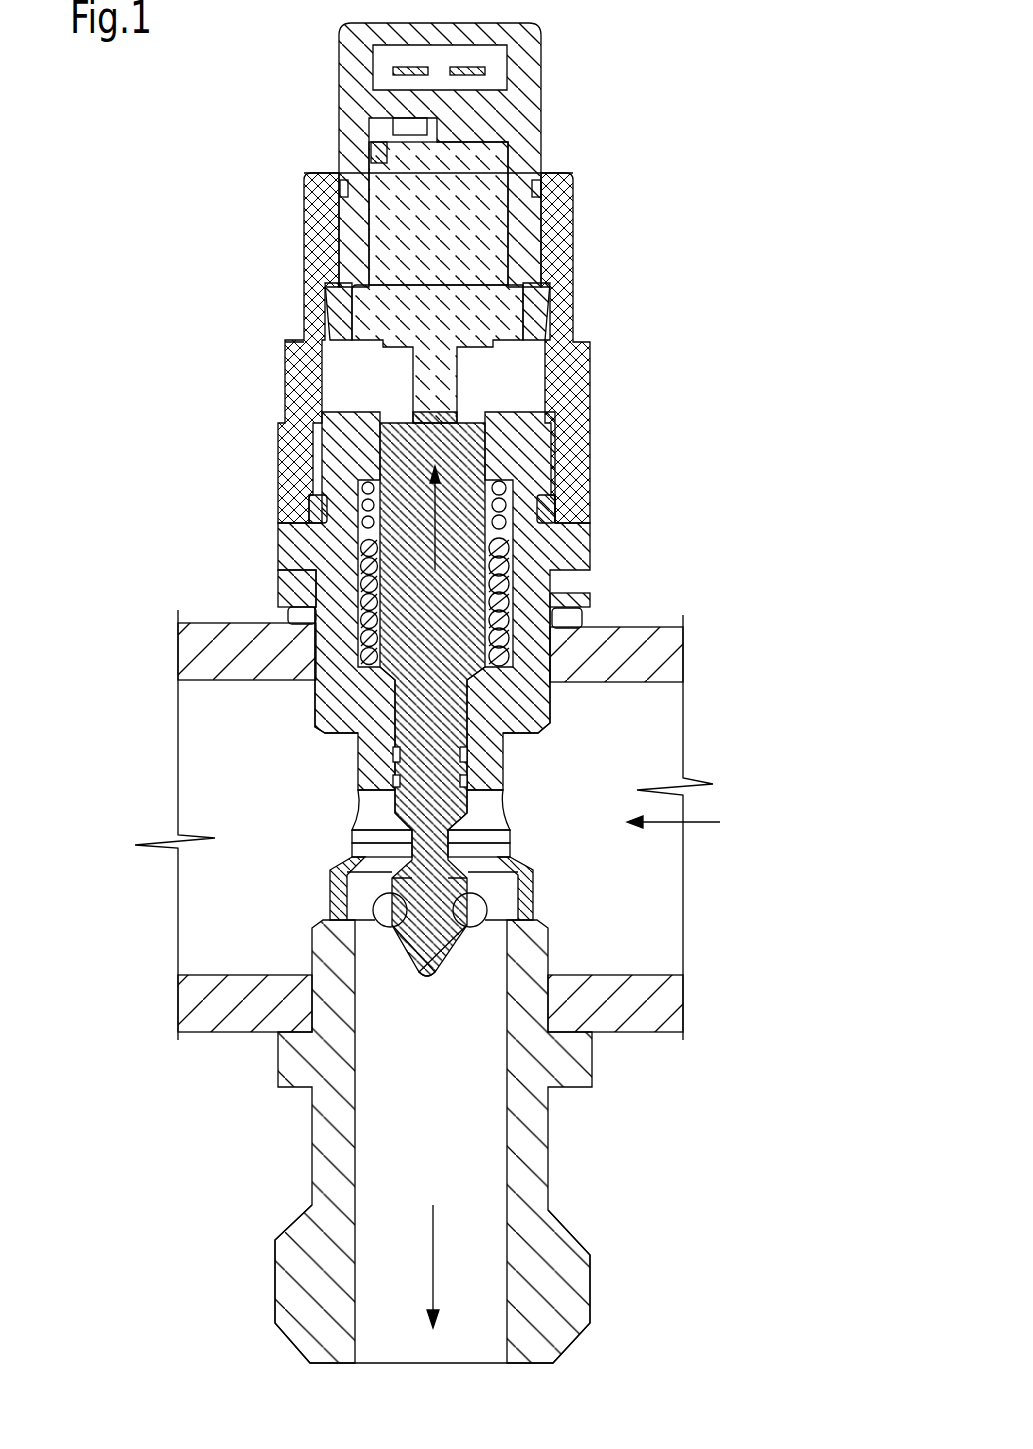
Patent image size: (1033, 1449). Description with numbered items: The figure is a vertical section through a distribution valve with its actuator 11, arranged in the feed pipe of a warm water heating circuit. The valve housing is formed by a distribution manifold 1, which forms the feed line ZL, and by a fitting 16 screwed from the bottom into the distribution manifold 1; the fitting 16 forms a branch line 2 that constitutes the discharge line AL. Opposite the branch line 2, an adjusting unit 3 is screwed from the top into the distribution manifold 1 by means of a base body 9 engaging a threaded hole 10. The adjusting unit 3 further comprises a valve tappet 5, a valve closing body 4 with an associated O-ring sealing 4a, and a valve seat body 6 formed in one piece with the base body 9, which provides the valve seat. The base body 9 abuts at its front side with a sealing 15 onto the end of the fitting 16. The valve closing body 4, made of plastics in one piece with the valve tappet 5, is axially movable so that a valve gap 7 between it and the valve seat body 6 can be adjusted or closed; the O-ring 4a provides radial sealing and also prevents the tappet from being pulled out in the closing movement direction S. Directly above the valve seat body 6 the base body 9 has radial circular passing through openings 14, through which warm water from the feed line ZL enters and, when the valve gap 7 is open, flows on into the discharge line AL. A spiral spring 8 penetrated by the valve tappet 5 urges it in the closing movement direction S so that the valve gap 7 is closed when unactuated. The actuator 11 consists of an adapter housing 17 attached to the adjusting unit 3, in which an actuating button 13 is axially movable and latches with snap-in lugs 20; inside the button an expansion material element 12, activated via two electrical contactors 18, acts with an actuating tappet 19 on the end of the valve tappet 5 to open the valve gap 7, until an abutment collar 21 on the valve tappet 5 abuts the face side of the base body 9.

The distribution manifold 1 is at (240, 635).
The branch line 2 is at (630, 1202).
The adjusting unit 3 is at (652, 556).
The valve closing body 4 is at (432, 930).
The O-ring sealing 4a is at (470, 910).
The valve tappet 5 is at (437, 722).
The valve seat body 6 is at (350, 860).
The valve gap 7 is at (505, 881).
The spiral spring 8 is at (497, 608).
The base body 9 is at (336, 694).
The threaded hole 10 is at (300, 657).
The actuator 11 is at (640, 272).
The expansion material element 12 is at (403, 252).
The actuating button 13 is at (363, 95).
The passing through openings 14 is at (342, 814).
The sealing 15 is at (348, 920).
The fitting 16 is at (300, 1255).
The adapter housing 17 is at (292, 457).
The electrical contactors 18 is at (405, 70).
The actuating tappet 19 is at (425, 398).
The snap-in lugs 20 is at (333, 283).
The abutment collar 21 is at (522, 420).
The closing movement direction S is at (429, 549).
The feed line ZL is at (713, 823).
The discharge line AL is at (419, 1231).